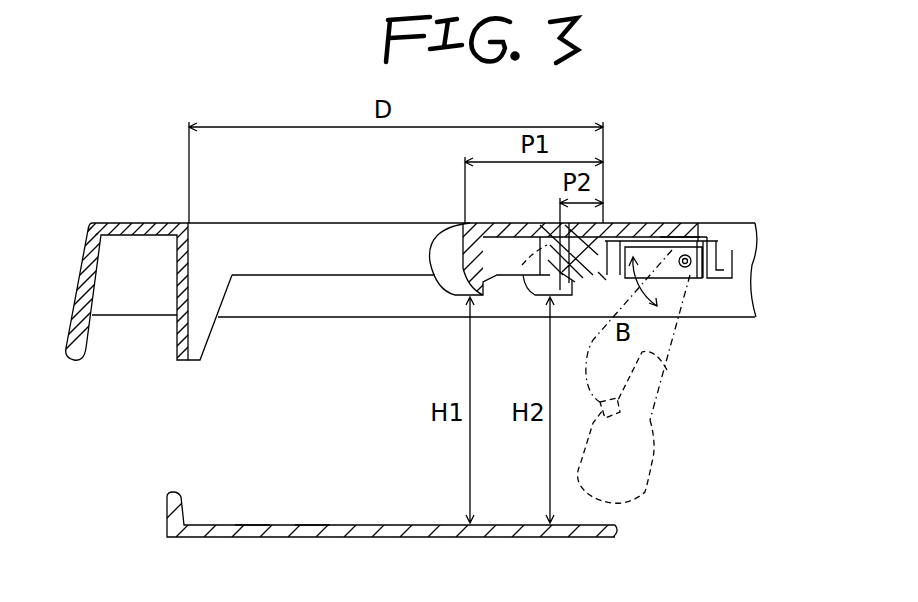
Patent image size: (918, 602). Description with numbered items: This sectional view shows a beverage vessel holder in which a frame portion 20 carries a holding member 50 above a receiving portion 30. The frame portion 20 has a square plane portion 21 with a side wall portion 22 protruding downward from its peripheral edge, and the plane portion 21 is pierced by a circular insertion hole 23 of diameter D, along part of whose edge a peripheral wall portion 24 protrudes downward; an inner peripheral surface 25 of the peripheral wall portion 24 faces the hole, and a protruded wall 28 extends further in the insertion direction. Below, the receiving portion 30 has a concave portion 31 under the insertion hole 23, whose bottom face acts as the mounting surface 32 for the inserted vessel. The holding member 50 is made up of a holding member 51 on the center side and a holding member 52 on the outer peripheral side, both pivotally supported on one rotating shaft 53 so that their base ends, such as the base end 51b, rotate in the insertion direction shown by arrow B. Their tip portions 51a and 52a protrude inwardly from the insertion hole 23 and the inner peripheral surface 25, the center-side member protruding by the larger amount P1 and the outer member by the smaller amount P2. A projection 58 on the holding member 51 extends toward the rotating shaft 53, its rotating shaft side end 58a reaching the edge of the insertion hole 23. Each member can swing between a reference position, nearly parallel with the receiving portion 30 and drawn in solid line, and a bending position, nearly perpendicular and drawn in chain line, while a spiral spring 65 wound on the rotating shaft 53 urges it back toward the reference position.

The frame portion 20 is at (110, 222).
The plane portion 21 is at (151, 222).
The side wall portion 22 is at (132, 307).
The insertion hole 23 is at (190, 262).
The peripheral wall portion 24 is at (277, 230).
The inner peripheral surface 25 is at (340, 270).
The protruded wall 28 is at (212, 337).
The receiving portion 30 is at (165, 515).
The concave portion 31 is at (250, 523).
The mounting surface 32 is at (310, 523).
The holding member 50 is at (397, 353).
The holding member on the center side 51 is at (507, 222).
The tip portion 51a is at (463, 250).
The base end 51b is at (682, 227).
The holding member on the outer peripheral side 52 is at (633, 235).
The tip portion 52a is at (562, 297).
The rotating shaft 53 is at (688, 268).
The projection 58 is at (572, 283).
The rotating shaft side end 58a is at (605, 280).
The spiral spring 65 is at (738, 250).